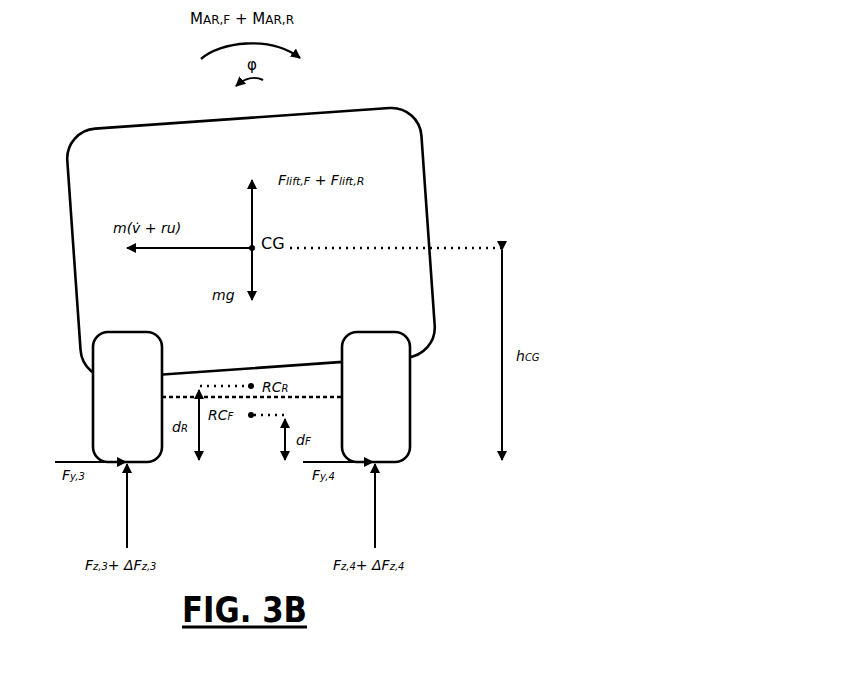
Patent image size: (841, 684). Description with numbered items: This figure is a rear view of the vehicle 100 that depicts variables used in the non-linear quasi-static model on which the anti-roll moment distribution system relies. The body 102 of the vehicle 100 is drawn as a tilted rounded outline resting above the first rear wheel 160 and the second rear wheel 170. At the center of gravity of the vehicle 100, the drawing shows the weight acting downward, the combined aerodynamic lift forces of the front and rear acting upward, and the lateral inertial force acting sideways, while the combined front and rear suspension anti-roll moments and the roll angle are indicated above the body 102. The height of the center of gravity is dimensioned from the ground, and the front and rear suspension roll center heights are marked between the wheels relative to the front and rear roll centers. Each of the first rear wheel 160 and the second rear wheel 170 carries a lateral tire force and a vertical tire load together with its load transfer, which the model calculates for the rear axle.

The vehicle 100 is at (465, 66).
The body 102 is at (180, 127).
The first rear wheel 160 is at (93, 410).
The second rear wheel 170 is at (410, 403).